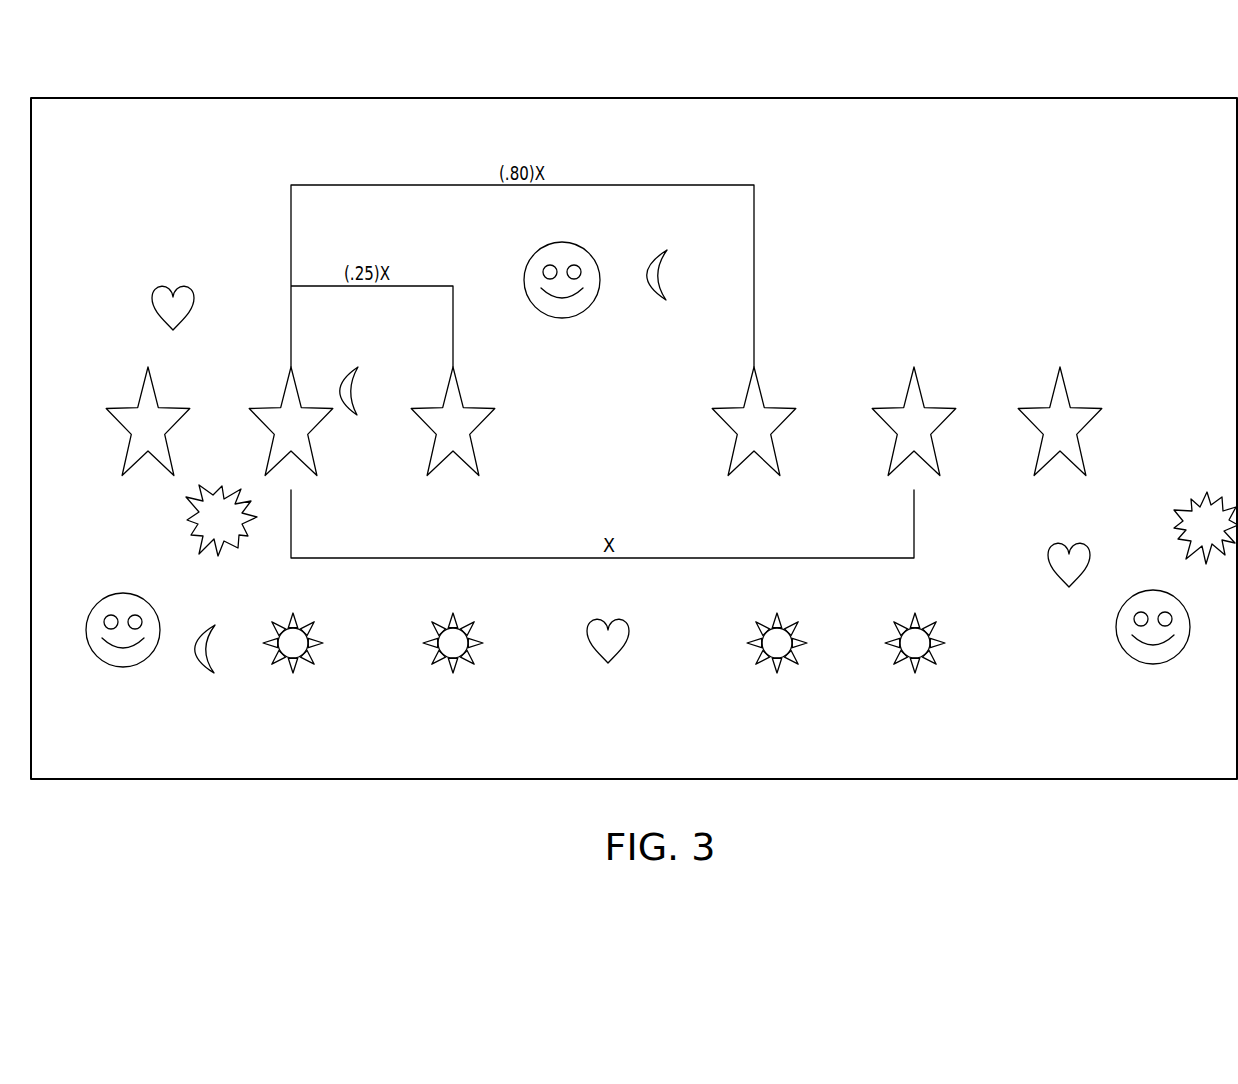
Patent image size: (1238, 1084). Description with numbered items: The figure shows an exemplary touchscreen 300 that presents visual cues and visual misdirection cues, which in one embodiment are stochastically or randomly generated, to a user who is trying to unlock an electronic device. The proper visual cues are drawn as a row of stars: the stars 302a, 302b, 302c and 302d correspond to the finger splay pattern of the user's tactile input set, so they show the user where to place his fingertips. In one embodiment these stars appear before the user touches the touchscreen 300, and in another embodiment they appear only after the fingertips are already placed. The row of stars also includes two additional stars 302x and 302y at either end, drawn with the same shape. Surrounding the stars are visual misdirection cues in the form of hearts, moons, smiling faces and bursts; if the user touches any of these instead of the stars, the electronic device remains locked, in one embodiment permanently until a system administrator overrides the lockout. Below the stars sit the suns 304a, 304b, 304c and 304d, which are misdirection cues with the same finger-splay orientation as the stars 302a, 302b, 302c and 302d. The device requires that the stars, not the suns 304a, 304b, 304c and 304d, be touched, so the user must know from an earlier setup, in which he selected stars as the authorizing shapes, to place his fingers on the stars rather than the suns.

The touchscreen 300 is at (634, 395).
The star object 302x is at (136, 398).
The visual cue 302a is at (279, 398).
The visual cue 302b is at (463, 398).
The visual cue 302c is at (764, 398).
The visual cue 302d is at (924, 398).
The star object 302y is at (1070, 398).
The visual misdirection cue 304a is at (293, 674).
The visual misdirection cue 304b is at (453, 674).
The visual misdirection cue 304c is at (777, 674).
The visual misdirection cue 304d is at (915, 674).